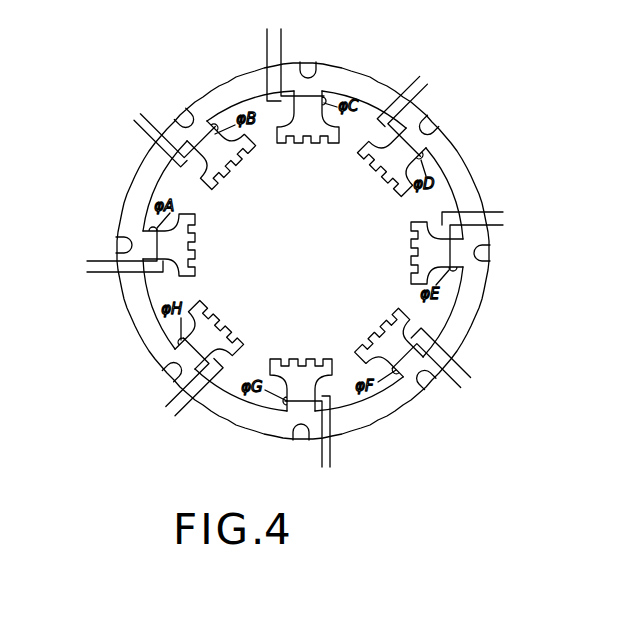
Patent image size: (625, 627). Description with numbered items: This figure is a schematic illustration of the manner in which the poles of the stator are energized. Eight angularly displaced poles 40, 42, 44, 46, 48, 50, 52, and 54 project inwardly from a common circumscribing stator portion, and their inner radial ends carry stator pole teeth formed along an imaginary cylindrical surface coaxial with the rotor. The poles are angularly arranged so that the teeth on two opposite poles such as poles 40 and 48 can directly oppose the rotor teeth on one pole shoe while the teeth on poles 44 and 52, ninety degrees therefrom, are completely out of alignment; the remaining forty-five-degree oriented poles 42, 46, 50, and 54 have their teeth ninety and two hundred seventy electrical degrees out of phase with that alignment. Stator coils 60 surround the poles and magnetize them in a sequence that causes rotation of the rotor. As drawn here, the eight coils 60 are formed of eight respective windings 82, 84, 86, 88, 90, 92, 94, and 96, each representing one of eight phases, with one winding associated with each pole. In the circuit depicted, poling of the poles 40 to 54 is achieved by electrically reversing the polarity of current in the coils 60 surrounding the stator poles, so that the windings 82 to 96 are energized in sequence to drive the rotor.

The pole 40 is at (310, 142).
The pole 42 is at (398, 178).
The pole 44 is at (410, 258).
The pole 46 is at (380, 343).
The pole 48 is at (309, 362).
The pole 50 is at (232, 334).
The pole 52 is at (193, 245).
The pole 54 is at (228, 166).
The stator coils 60 is at (428, 118).
The winding 82 is at (306, 78).
The winding 84 is at (428, 142).
The winding 86 is at (503, 236).
The winding 88 is at (418, 386).
The winding 90 is at (293, 442).
The winding 92 is at (180, 382).
The winding 94 is at (118, 244).
The winding 96 is at (186, 118).